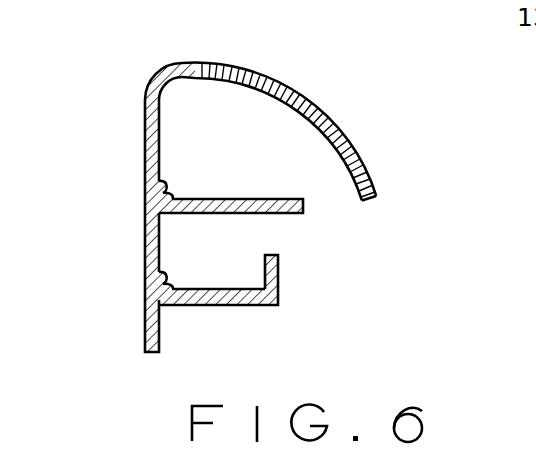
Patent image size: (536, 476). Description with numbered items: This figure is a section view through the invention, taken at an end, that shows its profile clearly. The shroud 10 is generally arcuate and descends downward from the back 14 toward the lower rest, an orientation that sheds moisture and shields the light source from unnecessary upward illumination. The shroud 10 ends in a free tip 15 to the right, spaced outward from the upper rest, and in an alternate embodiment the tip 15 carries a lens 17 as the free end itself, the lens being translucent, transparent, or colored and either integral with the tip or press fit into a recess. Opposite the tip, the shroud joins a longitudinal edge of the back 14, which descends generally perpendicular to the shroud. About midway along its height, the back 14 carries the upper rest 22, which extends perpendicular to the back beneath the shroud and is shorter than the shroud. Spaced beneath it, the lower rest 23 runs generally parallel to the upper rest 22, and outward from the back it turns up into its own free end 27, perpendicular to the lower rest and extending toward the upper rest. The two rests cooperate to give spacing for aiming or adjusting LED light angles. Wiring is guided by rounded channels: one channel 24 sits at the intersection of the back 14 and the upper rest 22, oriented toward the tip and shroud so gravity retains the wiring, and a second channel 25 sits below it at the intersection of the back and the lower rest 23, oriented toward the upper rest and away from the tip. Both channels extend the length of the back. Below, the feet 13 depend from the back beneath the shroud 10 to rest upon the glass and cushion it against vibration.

The shroud 10 is at (278, 83).
The feet 13 is at (145, 335).
The back 14 is at (145, 178).
The tip 15 is at (338, 128).
The lens 17 is at (375, 202).
The upper rest 22 is at (303, 204).
The lower rest 23 is at (279, 294).
The channel 24 is at (145, 203).
The channel 25 is at (145, 296).
The free end 27 is at (279, 266).